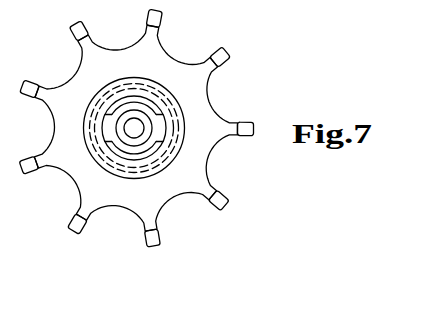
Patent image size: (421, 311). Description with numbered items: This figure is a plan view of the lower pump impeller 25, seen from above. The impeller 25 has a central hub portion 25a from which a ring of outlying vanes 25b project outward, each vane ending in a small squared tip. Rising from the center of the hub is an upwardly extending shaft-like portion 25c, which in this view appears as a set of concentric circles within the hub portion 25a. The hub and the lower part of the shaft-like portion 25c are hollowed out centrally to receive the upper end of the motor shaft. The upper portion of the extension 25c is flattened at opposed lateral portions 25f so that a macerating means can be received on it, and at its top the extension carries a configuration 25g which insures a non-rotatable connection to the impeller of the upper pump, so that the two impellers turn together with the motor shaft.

The impeller 25 is at (209, 156).
The central hub portion 25a is at (205, 112).
The outlying vanes 25b is at (227, 51).
The shaft-like portion 25c is at (159, 173).
The flattened lateral portions 25f is at (133, 90).
The configuration 25g is at (107, 134).